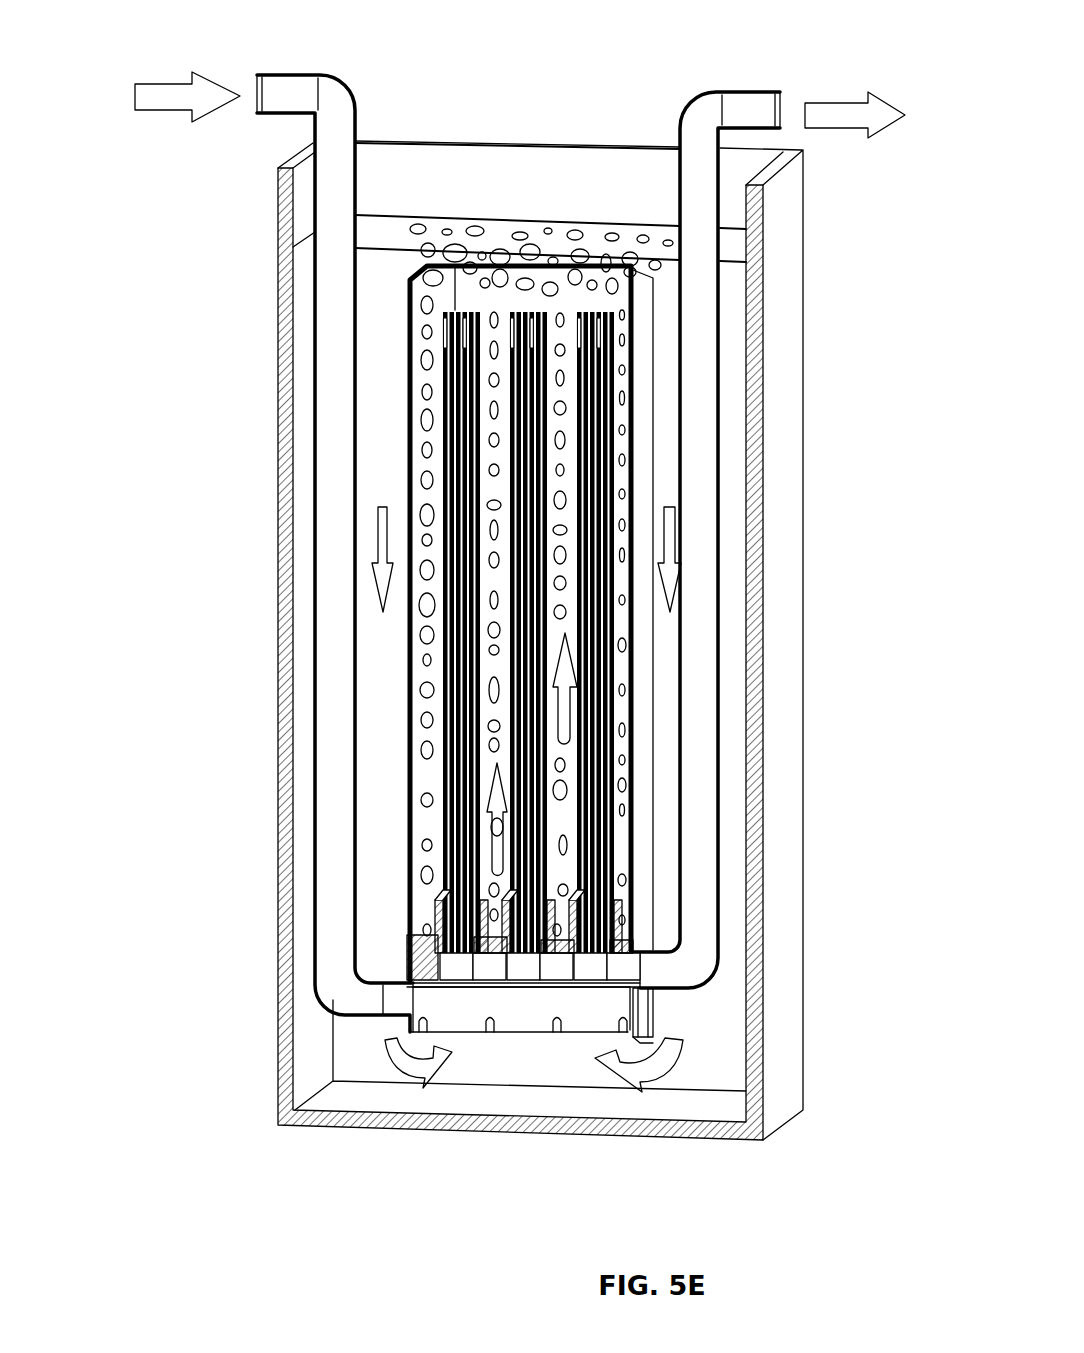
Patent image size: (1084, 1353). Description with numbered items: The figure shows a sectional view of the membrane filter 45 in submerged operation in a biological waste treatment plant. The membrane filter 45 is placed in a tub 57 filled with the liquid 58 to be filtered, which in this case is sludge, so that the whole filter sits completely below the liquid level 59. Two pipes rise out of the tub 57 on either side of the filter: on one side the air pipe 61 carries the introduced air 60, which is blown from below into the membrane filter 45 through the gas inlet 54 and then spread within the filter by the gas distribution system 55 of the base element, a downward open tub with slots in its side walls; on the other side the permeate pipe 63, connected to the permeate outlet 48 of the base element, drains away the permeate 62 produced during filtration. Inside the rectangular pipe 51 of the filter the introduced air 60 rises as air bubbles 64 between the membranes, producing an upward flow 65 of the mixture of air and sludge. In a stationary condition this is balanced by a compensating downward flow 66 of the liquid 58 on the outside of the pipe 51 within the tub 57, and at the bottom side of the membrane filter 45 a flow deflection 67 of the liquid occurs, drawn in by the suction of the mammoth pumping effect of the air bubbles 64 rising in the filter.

The membrane filter 45 is at (172, 496).
The permeate outlet 48 is at (672, 968).
The pipe 51 is at (407, 320).
The gas inlet 54 is at (357, 998).
The gas distribution system 55 is at (513, 1013).
The tub 57 is at (508, 178).
The liquid to be filtered 58 is at (397, 230).
The liquid level 59 is at (370, 215).
The air 60 is at (190, 98).
The air pipe 61 is at (333, 921).
The permeate 62 is at (880, 115).
The permeate pipe 63 is at (700, 850).
The air bubble 64 is at (413, 750).
The upward flow 65 is at (497, 838).
The downward flow 66 is at (383, 535).
The flow deflection 67 is at (663, 1060).